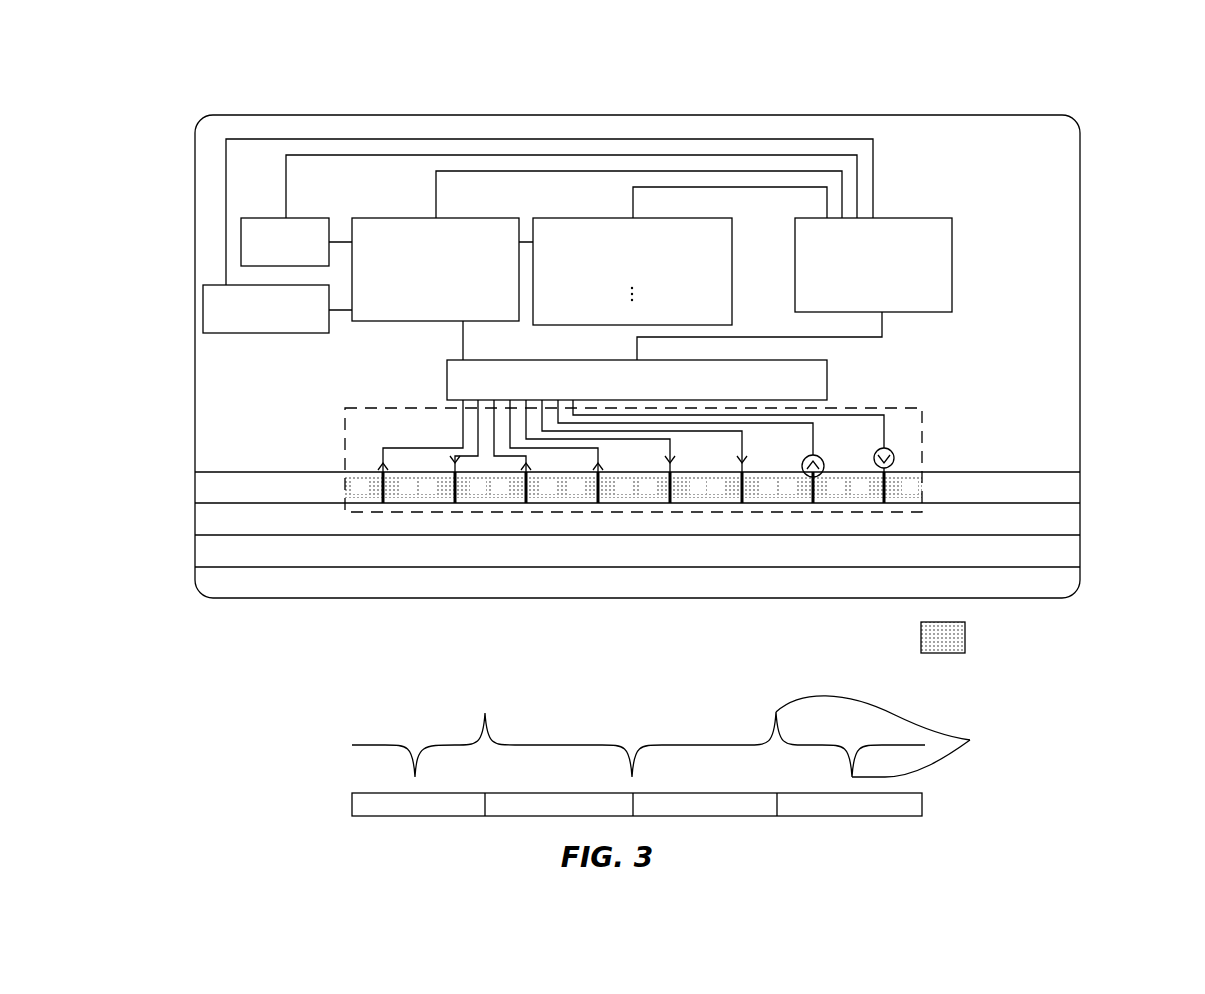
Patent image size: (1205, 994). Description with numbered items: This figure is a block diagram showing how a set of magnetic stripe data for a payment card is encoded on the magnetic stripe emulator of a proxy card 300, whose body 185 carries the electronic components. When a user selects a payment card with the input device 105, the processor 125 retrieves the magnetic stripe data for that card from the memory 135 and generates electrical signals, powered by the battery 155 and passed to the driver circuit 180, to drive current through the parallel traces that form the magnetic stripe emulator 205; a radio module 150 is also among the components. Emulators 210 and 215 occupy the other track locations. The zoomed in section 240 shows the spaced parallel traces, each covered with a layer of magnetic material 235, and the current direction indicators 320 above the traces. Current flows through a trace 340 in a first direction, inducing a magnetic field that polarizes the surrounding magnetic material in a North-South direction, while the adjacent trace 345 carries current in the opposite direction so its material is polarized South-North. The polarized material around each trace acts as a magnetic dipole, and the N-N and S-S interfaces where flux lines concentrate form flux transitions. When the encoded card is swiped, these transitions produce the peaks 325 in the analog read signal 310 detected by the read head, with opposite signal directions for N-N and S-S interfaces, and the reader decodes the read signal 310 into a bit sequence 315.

The proxy card 300 is at (652, 331).
The housing 185 is at (911, 133).
The input device 105 is at (307, 218).
The processor 125 is at (481, 218).
The memory 135 is at (732, 257).
The battery 155 is at (905, 218).
The radio module 150 is at (295, 333).
The driver circuit 180 is at (827, 383).
The zoomed in section 240 is at (670, 443).
The current direction indicators 320 is at (820, 458).
The magnetic stripe emulator 205 is at (668, 557).
The magnetic stripe emulator 210 is at (1080, 518).
The magnetic stripe emulator 215 is at (1080, 550).
The magnetic material 235 is at (962, 637).
The trace 340 is at (381, 501).
The trace 345 is at (452, 501).
The analog read signal 310 is at (530, 744).
The bit sequence 315 is at (574, 804).
The peaks 325 is at (895, 736).